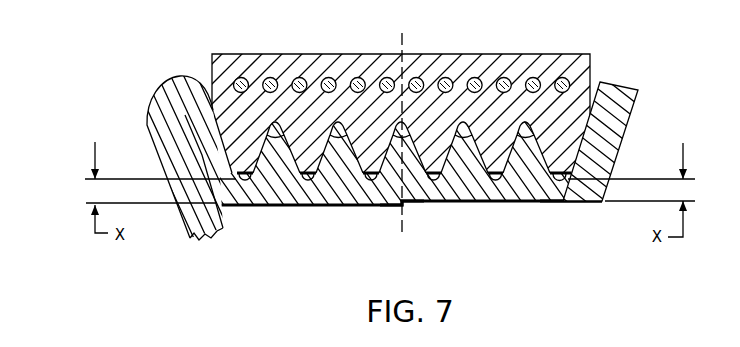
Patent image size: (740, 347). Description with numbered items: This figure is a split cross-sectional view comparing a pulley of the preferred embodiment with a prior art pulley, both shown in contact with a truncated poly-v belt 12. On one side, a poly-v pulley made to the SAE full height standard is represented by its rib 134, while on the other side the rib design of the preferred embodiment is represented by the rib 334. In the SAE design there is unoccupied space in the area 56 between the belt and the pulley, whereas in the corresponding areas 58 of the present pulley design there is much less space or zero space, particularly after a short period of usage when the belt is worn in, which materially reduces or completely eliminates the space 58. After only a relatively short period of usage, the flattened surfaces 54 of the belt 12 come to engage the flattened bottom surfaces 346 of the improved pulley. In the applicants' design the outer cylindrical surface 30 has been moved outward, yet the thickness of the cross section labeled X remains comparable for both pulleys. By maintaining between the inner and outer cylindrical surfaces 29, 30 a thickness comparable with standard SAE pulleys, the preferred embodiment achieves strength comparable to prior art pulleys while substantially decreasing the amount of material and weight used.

The belt 12 is at (592, 75).
The inner cylindrical surface 29 is at (433, 184).
The outer cylindrical surface 30 is at (414, 203).
The flattened surfaces 54 is at (566, 172).
The area 56 is at (296, 185).
The areas 58 is at (493, 185).
The rib 134 is at (338, 166).
The rib 334 is at (528, 156).
The flattened bottom surfaces 346 is at (572, 202).